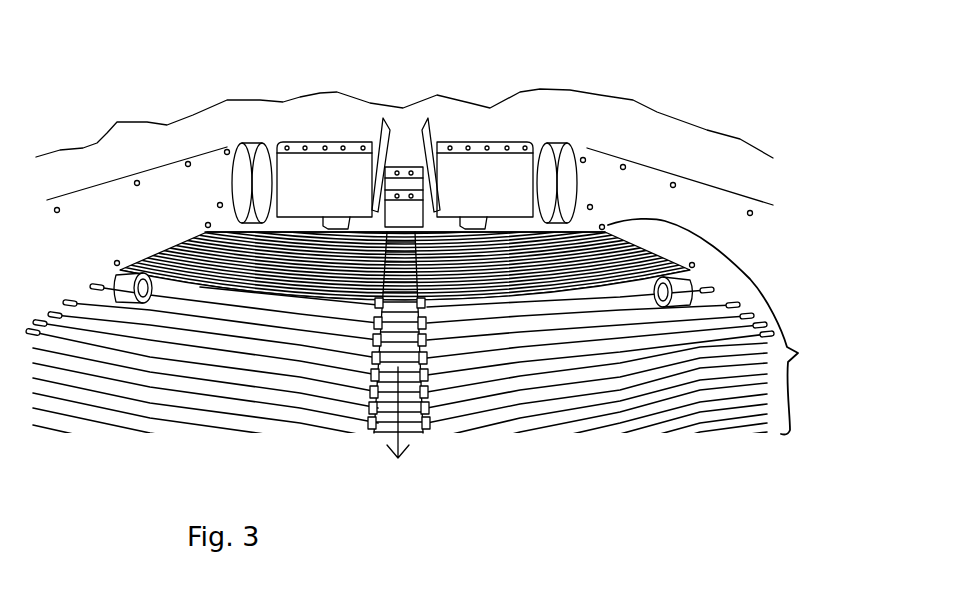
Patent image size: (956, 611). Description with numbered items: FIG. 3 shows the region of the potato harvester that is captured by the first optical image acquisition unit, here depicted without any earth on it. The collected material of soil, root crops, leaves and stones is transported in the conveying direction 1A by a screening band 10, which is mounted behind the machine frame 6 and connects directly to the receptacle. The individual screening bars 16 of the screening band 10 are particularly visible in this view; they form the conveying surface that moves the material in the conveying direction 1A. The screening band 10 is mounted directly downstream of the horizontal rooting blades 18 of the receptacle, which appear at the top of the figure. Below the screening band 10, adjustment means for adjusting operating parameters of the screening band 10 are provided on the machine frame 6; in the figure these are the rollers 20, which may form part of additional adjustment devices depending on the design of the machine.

The machine frame 6 is at (714, 213).
The horizontal rooting blades 18 is at (327, 217).
The rollers 20 is at (117, 279).
The screening band 10 is at (728, 327).
The screening bars 16 is at (285, 393).
The conveying direction 1A is at (398, 388).